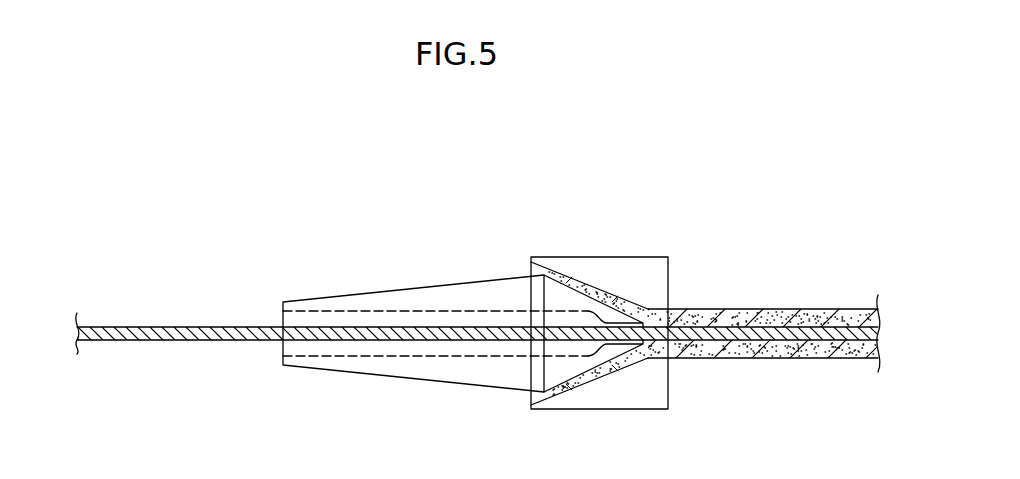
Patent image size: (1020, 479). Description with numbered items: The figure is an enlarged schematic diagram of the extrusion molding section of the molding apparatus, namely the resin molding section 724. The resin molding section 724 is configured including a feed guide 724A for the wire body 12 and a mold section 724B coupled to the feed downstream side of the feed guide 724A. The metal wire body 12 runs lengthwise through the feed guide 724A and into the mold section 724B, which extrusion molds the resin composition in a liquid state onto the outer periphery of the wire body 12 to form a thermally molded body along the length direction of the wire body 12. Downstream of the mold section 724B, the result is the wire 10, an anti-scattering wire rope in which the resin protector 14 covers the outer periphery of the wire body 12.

The wire 10 is at (757, 287).
The wire body 12 is at (174, 333).
The protector 14 is at (830, 244).
The resin molding section 724 is at (483, 287).
The feed guide 724A is at (428, 383).
The mold section 724B is at (641, 265).